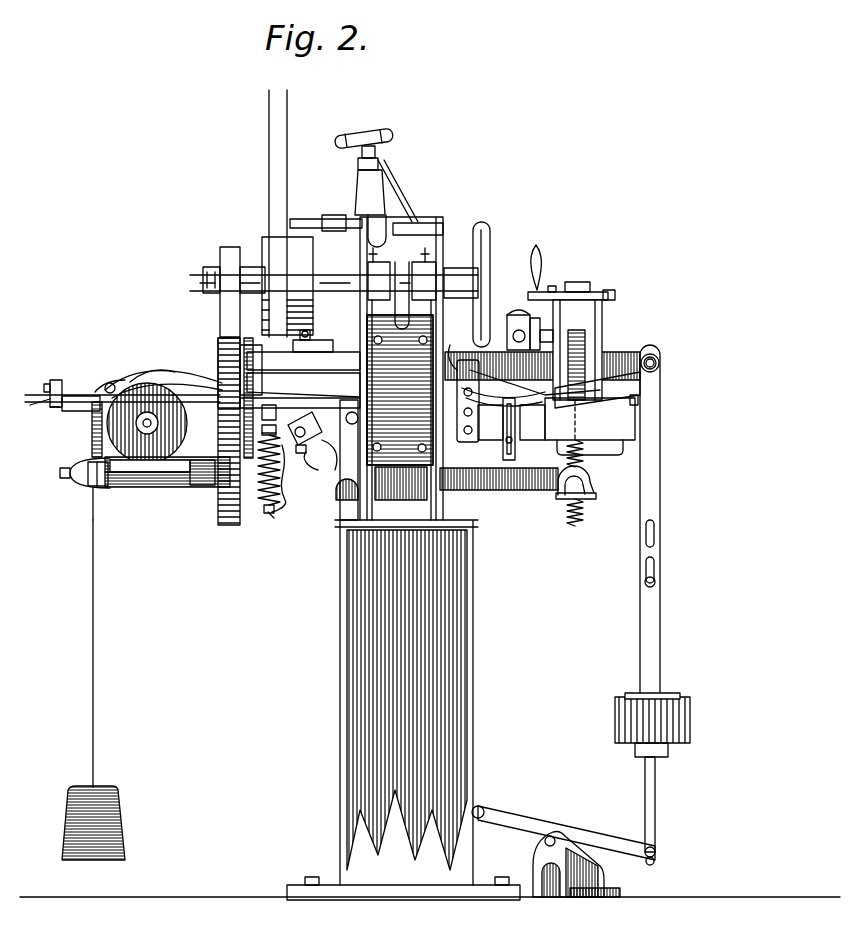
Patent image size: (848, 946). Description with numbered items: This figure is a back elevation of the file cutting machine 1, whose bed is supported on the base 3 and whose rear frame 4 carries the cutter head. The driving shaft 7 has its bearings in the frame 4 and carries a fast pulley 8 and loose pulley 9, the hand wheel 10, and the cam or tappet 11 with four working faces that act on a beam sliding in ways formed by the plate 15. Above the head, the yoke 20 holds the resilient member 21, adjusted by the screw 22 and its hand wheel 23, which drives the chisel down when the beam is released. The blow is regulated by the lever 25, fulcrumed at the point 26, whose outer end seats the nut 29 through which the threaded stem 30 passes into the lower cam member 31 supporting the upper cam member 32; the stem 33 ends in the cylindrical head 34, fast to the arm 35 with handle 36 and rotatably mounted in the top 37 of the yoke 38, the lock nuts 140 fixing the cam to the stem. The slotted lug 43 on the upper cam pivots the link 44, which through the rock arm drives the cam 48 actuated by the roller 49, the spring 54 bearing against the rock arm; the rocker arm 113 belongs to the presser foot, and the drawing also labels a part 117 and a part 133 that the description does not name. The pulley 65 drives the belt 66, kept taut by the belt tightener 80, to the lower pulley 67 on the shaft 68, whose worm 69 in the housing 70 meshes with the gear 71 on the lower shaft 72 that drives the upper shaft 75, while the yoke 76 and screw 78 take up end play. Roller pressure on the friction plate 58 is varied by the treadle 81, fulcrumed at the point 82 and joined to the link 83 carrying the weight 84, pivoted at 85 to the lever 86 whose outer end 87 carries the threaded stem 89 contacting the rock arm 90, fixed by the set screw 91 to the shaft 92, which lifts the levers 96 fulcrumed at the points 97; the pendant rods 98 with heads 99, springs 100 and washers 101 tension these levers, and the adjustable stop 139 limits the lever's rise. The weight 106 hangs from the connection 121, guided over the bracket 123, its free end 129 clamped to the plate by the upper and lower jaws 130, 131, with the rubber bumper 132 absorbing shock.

The file cutting machine 1 is at (446, 218).
The base 3 is at (465, 615).
The frame 4 is at (440, 398).
The driving shaft 7 is at (330, 275).
The fast pulley 8 is at (287, 286).
The loose pulley 9 is at (268, 240).
The hand wheel 10 is at (488, 230).
The cam or tappet 11 is at (402, 262).
The plate 15 is at (400, 390).
The yoke 20 is at (388, 188).
The spring or resilient member 21 is at (412, 218).
The screw 22 is at (378, 160).
The hand wheel 23 is at (372, 132).
The lever 25 is at (505, 490).
The fulcrum point 26 is at (340, 502).
The nut 29 is at (592, 486).
The threaded stem 30 is at (584, 518).
The lower cam member 31 is at (622, 388).
The upper cam member 32 is at (612, 362).
The threaded stem 33 is at (600, 330).
The cylindrical head 34 is at (580, 284).
The arm 35 is at (548, 290).
The handle 36 is at (540, 250).
The top of yoke 37 is at (617, 289).
The yoke 38 is at (553, 322).
The slotted lug 43 is at (472, 378).
The link 44 is at (458, 340).
The cam 48 is at (490, 422).
The roller 49 is at (533, 422).
The spring 54 is at (440, 386).
The friction plate 58 is at (48, 384).
The pulley 65 is at (222, 252).
The belt 66 is at (206, 290).
The lower pulley 67 is at (232, 520).
The shaft 68 is at (205, 484).
The worm 69 is at (125, 488).
The housing 70 is at (160, 488).
The gear 71 is at (107, 445).
The lower shaft 72 is at (92, 425).
The shaft 75 is at (120, 372).
The yoke 76 is at (86, 486).
The screw 78 is at (92, 498).
The belt tightener 80 is at (218, 360).
The treadle 81 is at (500, 818).
The fulcrum point 82 is at (556, 818).
The link 83 is at (640, 612).
The weight 84 is at (615, 712).
The pivot connection 85 is at (659, 365).
The lever 86 is at (662, 355).
The outer end of lever 87 is at (308, 346).
The threaded stem 89 is at (310, 428).
The tappet or rock arm 90 is at (318, 446).
The set screw 91 is at (320, 468).
The shaft 92 is at (282, 470).
The levers 96 is at (160, 366).
The fulcrum points 97 is at (105, 385).
The pendant rods 98 is at (261, 398).
The head 99 is at (270, 514).
The spring 100 is at (280, 505).
The washer 101 is at (262, 440).
The weight 106 is at (110, 785).
The rocker arm 113 is at (543, 341).
The bracket 117 is at (512, 318).
The connection 121 is at (95, 652).
The bracket 123 is at (70, 410).
The free end of connection 129 is at (45, 402).
The upper jaw 130 is at (58, 380).
The lower jaw 131 is at (55, 405).
The rubber bumper 132 is at (81, 396).
The bar 133 is at (335, 217).
The adjustable stop 139 is at (585, 355).
The lock nuts 140 is at (580, 340).